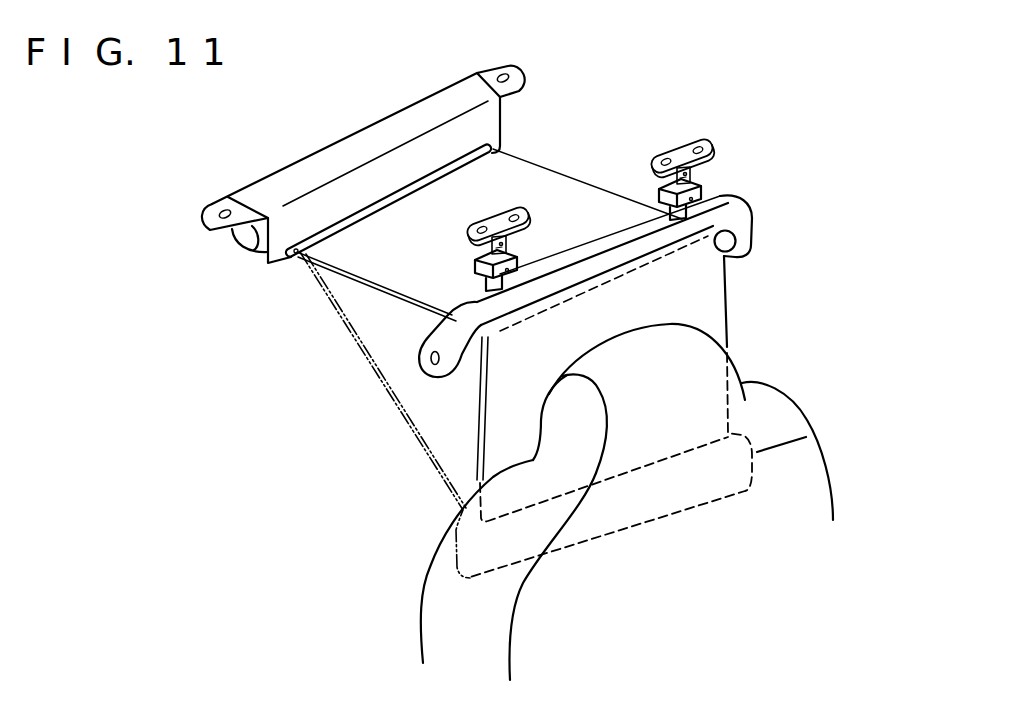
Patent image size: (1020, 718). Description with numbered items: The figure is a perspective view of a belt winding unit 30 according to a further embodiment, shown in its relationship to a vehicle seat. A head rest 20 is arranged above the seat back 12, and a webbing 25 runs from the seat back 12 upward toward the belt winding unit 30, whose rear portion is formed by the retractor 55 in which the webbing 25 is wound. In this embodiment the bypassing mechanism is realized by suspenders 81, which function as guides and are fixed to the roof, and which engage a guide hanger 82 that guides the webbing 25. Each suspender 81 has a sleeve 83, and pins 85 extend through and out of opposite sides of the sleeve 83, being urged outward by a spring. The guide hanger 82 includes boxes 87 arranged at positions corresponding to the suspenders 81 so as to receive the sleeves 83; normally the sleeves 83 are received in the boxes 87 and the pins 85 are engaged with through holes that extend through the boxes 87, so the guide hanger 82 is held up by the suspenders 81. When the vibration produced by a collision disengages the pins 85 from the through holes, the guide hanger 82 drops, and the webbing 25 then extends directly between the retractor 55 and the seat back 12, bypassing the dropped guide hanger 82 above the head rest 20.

The seat back 12 is at (437, 577).
The head rest 20 is at (673, 335).
The webbing 25 is at (534, 178).
The belt winding unit 30 is at (591, 108).
The retractor 55 is at (337, 157).
The suspender 81 is at (500, 220).
The guide hanger 82 is at (740, 208).
The sleeve 83 is at (474, 244).
The pin 85 is at (510, 241).
The box 87 is at (470, 262).